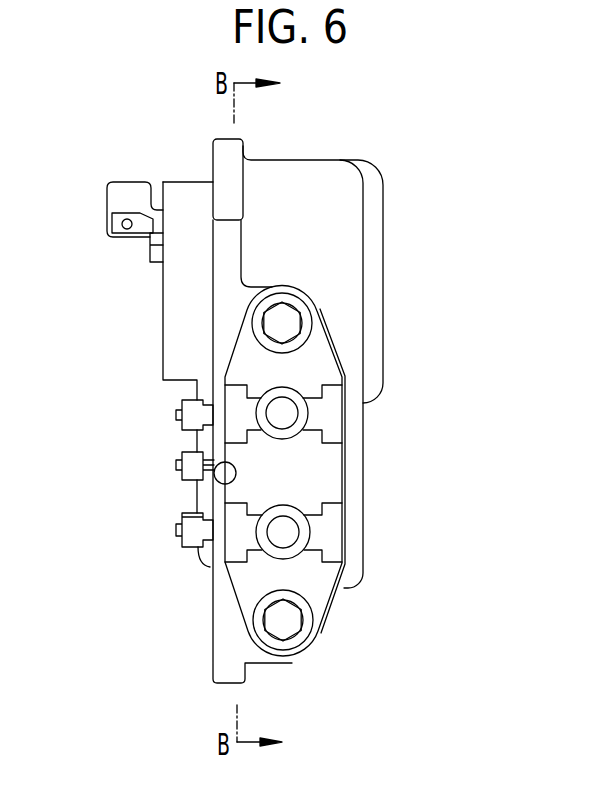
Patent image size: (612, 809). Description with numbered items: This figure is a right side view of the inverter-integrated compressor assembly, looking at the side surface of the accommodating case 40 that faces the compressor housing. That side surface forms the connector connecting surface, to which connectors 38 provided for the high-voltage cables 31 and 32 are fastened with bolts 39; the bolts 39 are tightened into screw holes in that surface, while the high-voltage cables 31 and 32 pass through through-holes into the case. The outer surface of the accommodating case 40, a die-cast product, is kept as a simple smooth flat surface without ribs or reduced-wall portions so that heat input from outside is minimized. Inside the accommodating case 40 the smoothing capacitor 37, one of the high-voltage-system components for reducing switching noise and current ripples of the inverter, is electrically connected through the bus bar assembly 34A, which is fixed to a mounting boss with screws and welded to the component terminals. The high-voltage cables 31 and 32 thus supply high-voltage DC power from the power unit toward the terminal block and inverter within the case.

The accommodating case 40 is at (331, 153).
The smoothing capacitor 37 is at (183, 316).
The bus bar assembly 34A is at (197, 497).
The connector 38 is at (316, 481).
The high-voltage cable 31 is at (288, 413).
The high-voltage cable 32 is at (290, 536).
The bolt 39 is at (290, 622).